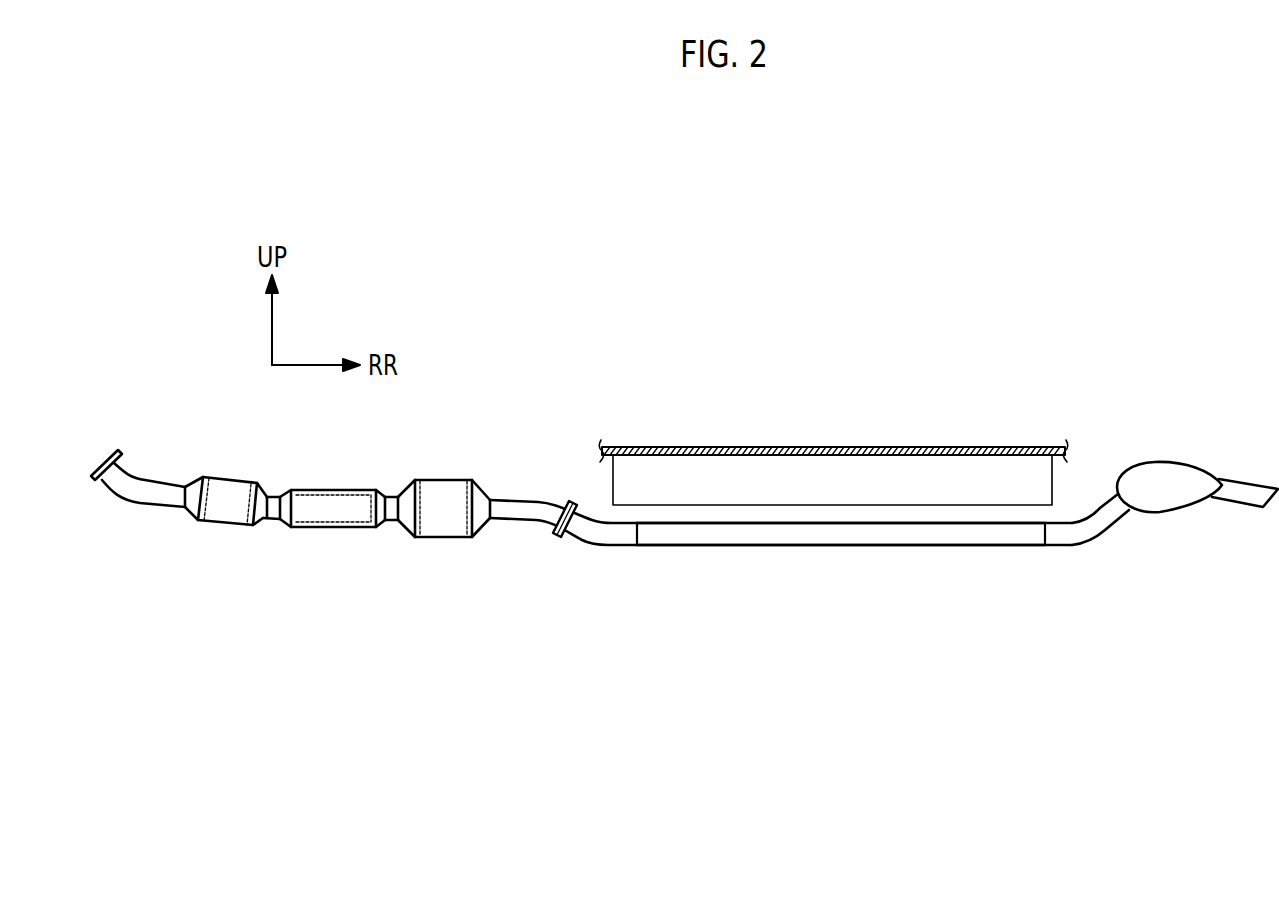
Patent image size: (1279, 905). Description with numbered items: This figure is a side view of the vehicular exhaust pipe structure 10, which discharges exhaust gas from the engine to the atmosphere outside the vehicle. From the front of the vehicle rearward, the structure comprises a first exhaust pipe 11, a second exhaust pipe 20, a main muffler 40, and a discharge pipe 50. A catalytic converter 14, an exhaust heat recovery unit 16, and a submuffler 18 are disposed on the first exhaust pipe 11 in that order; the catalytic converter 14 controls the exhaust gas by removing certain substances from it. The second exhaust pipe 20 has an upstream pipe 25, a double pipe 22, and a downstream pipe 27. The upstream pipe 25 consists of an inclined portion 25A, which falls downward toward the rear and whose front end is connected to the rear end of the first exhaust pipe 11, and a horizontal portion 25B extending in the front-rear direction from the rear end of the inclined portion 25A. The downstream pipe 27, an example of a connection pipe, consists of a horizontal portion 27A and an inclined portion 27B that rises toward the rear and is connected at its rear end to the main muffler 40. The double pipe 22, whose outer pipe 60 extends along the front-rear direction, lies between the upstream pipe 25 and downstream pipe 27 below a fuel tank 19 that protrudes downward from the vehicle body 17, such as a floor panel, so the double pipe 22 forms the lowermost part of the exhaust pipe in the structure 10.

The vehicular exhaust pipe structure 10 is at (1134, 330).
The first exhaust pipe 11 is at (513, 526).
The catalytic converter 14 is at (221, 517).
The exhaust heat recovery unit 16 is at (333, 513).
The submuffler 18 is at (438, 522).
The vehicle body 17 is at (650, 448).
The fuel tank 19 is at (1002, 462).
The second exhaust pipe 20 is at (876, 635).
The double pipe 22 is at (838, 551).
The upstream pipe 25 is at (638, 628).
The inclined portion 25A is at (576, 539).
The horizontal portion 25B is at (620, 545).
The downstream pipe 27 is at (1173, 630).
The horizontal portion 27A is at (1063, 546).
The inclined portion 27B is at (1100, 543).
The main muffler 40 is at (1180, 463).
The discharge pipe 50 is at (1248, 479).
The outer pipe 60 is at (775, 546).